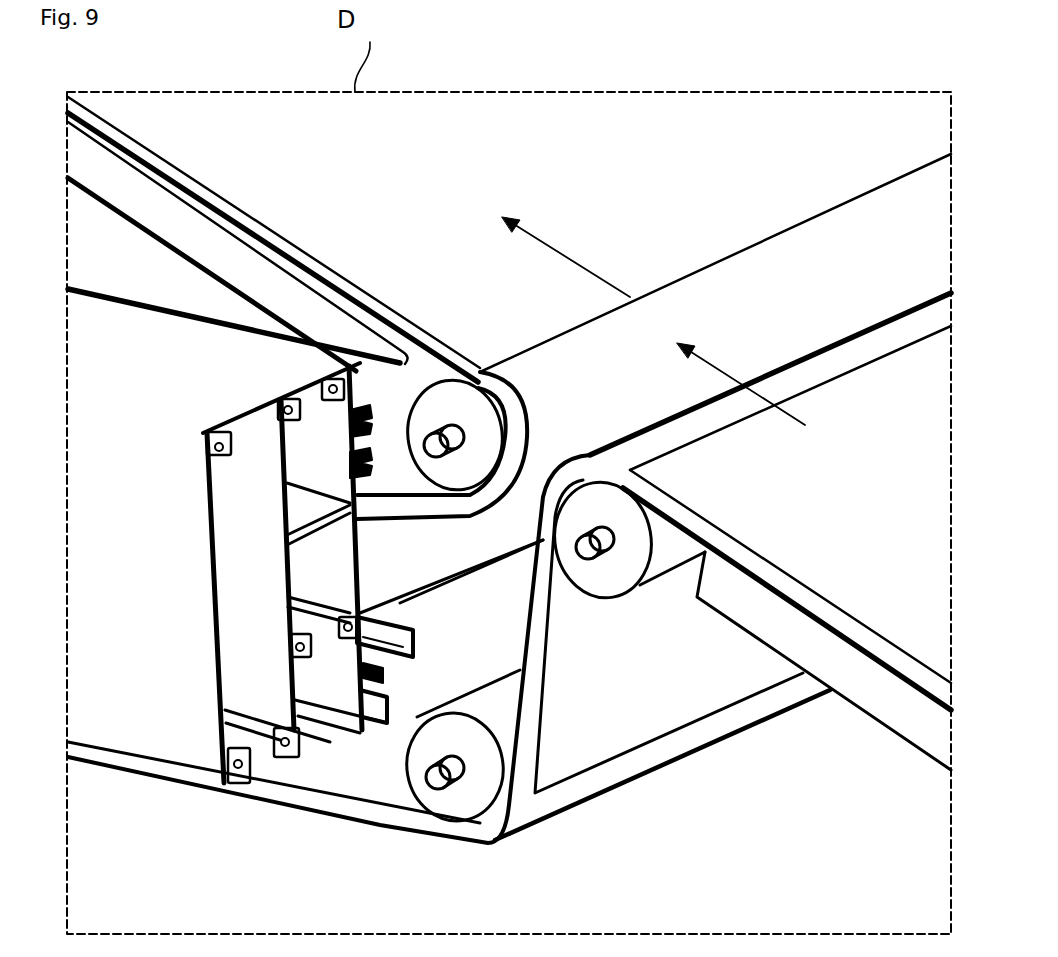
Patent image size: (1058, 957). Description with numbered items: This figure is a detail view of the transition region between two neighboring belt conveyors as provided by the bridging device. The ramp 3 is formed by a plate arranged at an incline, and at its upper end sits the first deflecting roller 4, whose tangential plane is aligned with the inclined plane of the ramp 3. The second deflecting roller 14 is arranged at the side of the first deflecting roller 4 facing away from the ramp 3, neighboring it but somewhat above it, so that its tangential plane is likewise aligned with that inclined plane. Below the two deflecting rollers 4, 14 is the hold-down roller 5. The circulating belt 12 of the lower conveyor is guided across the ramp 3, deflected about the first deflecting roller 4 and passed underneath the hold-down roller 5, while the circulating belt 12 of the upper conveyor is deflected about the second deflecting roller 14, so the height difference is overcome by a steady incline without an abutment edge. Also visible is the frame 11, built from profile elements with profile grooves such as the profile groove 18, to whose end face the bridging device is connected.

The ramp 3 is at (275, 282).
The first deflecting roller 4 is at (627, 567).
The hold-down roller 5 is at (465, 798).
The frame 11 is at (132, 738).
The circulating belt 12 is at (661, 190).
The second deflecting roller 14 is at (482, 367).
The profile groove 18 is at (367, 440).